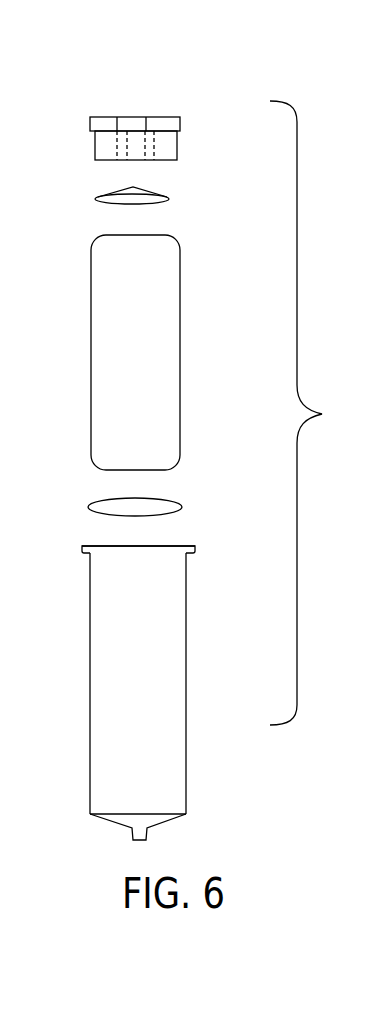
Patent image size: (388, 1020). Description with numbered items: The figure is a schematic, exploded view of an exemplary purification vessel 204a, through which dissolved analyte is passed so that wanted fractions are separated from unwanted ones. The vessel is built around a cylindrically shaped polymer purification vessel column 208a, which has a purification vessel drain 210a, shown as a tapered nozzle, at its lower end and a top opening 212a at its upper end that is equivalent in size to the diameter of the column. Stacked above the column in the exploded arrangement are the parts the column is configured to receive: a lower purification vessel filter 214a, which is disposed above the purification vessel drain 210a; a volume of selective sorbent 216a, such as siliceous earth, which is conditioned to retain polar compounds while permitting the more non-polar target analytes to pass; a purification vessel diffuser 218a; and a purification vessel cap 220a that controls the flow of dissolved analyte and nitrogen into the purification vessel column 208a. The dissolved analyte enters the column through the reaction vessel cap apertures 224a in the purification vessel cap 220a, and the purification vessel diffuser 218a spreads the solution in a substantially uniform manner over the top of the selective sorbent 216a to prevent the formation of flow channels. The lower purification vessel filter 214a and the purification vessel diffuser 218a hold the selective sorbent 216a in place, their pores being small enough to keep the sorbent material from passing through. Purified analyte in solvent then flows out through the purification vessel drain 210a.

The purification vessel 204a is at (320, 413).
The purification vessel column 208a is at (103, 625).
The purification vessel drain 210a is at (138, 823).
The top opening 212a is at (165, 547).
The lower purification vessel filter 214a is at (158, 505).
The selective sorbent 216a is at (178, 300).
The purification vessel diffuser 218a is at (168, 200).
The purification vessel cap 220a is at (167, 149).
The reaction vessel cap apertures 224a is at (123, 120).